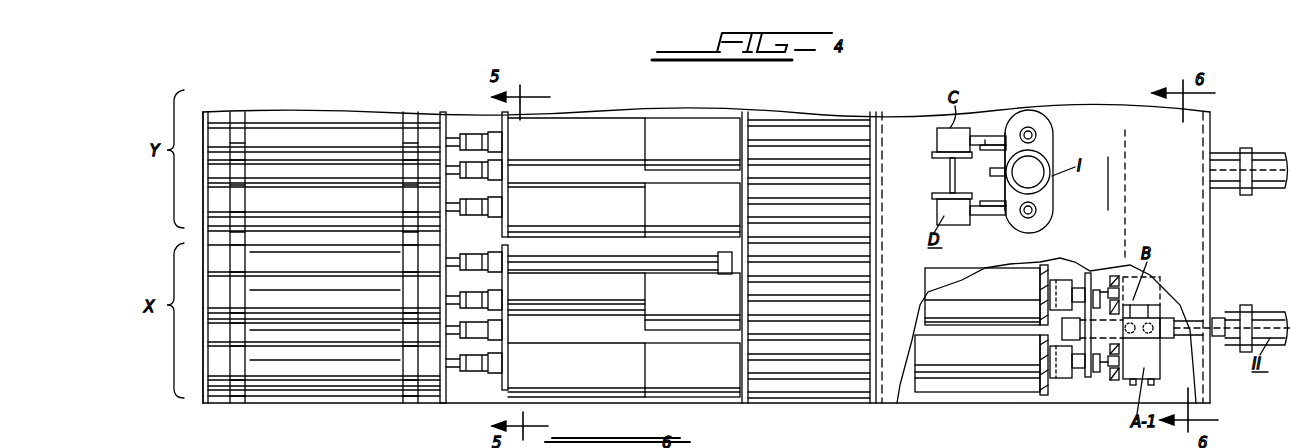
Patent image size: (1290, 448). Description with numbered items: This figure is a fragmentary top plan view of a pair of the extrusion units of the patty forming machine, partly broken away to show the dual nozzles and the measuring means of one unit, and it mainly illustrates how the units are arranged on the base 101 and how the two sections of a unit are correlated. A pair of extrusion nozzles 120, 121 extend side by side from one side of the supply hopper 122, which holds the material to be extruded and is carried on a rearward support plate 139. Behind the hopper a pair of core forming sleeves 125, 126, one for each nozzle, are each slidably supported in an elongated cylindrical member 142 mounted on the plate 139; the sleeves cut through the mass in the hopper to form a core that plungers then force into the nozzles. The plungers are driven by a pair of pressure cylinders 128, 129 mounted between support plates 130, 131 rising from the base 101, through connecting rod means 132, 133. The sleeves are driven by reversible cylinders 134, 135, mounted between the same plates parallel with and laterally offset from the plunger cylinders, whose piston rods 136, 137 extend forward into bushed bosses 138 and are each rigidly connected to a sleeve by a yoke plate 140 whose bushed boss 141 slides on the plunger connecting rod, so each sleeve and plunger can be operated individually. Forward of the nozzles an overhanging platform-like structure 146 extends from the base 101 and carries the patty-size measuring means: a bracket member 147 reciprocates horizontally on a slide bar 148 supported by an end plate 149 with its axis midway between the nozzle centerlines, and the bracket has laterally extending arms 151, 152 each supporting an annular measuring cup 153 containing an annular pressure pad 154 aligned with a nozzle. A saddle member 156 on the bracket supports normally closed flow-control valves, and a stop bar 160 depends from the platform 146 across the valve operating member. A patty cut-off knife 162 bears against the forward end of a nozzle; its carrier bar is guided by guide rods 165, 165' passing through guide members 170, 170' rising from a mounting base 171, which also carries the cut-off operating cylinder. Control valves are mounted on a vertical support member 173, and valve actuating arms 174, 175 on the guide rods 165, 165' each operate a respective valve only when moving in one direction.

The base 101 is at (611, 399).
The extrusion nozzle 120 is at (977, 363).
The extrusion nozzle 121 is at (982, 296).
The supply hopper 122 is at (803, 395).
The core forming sleeve 125 is at (623, 365).
The core forming sleeve 126 is at (625, 306).
The pressure cylinder 128 is at (336, 373).
The pressure cylinder 129 is at (338, 305).
The support plate 130 is at (444, 406).
The support plate 131 is at (205, 400).
The connecting rod means 132 is at (486, 374).
The connecting rod means 133 is at (480, 294).
The reversible cylinder 134 is at (325, 333).
The reversible cylinder 135 is at (338, 269).
The piston rod 136 is at (531, 334).
The piston rod 137 is at (557, 263).
The boss 138 is at (727, 274).
The rearward support plate 139 is at (745, 405).
The yoke plate 140 is at (509, 264).
The boss 141 is at (497, 301).
The elongated cylindrical member 142 is at (695, 306).
The overhanging platform-like structure 146 is at (1166, 206).
The bracket member 147 is at (1113, 336).
The slide bar 148 is at (1208, 300).
The end plate 149 is at (1212, 240).
The laterally extending arm 151 is at (1092, 380).
The laterally extending arm 152 is at (1088, 274).
The annular measuring cup 153 is at (1063, 278).
The annular pressure pad 154 is at (1055, 280).
The saddle member 156 is at (1152, 306).
The stop bar 160 is at (1115, 382).
The patty cut-off knife 162 is at (1043, 392).
The guide rod 165 is at (1065, 195).
The guide rod 165' is at (1077, 110).
The guide member 170 is at (1057, 210).
The guide member 170' is at (1053, 107).
The mounting base 171 is at (1054, 144).
The support member 173 is at (948, 179).
The valve actuating arm 174 is at (992, 216).
The valve actuating arm 175 is at (995, 136).